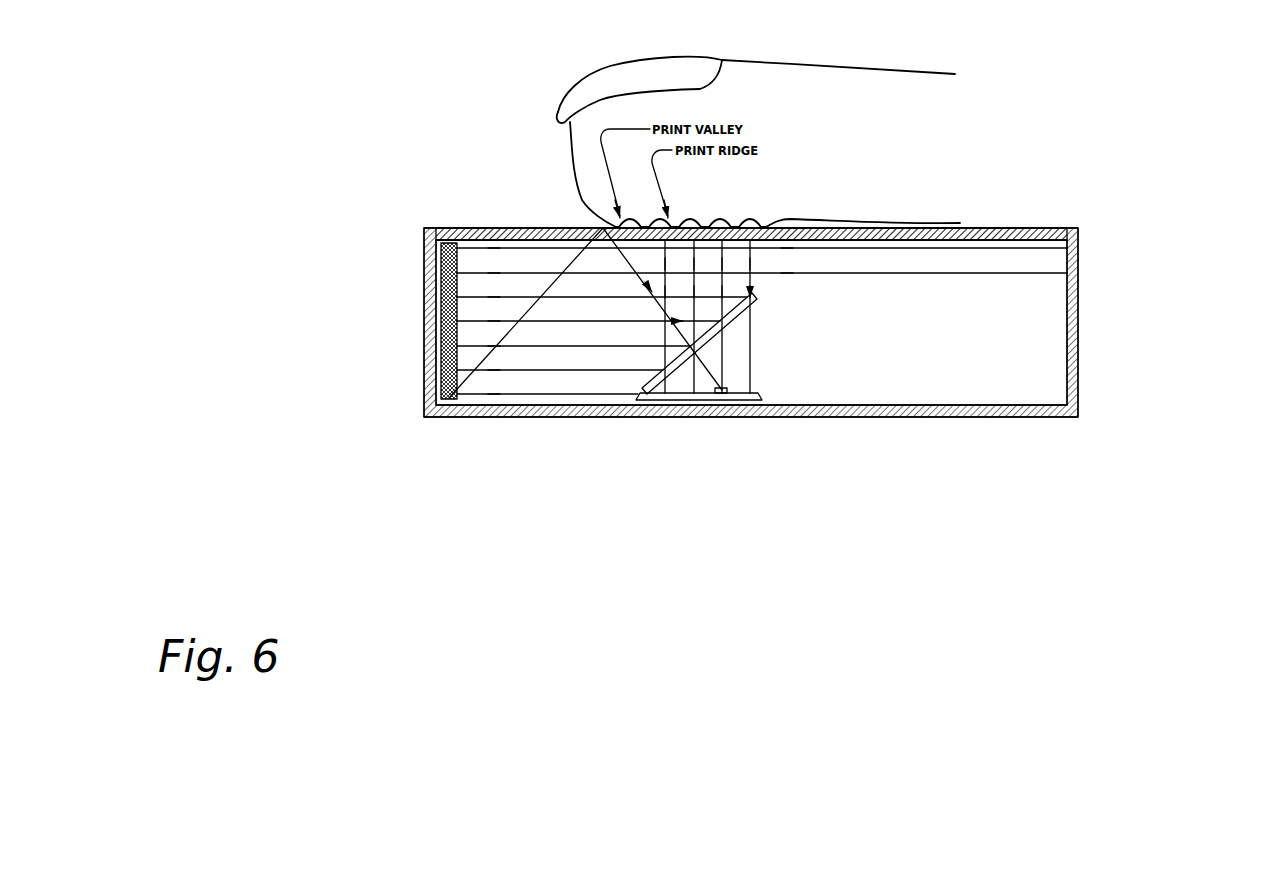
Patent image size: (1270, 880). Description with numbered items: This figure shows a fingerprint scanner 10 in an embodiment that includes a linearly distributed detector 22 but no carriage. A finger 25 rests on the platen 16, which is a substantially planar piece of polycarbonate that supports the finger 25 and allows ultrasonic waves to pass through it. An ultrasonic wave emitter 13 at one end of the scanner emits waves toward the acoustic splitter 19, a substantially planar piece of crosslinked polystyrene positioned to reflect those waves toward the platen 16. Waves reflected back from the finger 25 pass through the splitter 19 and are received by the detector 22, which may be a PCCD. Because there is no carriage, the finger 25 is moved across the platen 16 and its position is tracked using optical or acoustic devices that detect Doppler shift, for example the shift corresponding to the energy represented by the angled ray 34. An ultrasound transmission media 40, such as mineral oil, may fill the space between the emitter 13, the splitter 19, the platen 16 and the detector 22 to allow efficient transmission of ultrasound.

The fingerprint scanner 10 is at (1133, 311).
The ultrasonic wave emitter 13 is at (449, 398).
The platen 16 is at (972, 229).
The acoustic splitter 19 is at (737, 318).
The acoustic detector 22 is at (718, 392).
The finger 25 is at (568, 141).
The angled ray 34 is at (572, 259).
The ultrasound transmission media 40 is at (908, 355).